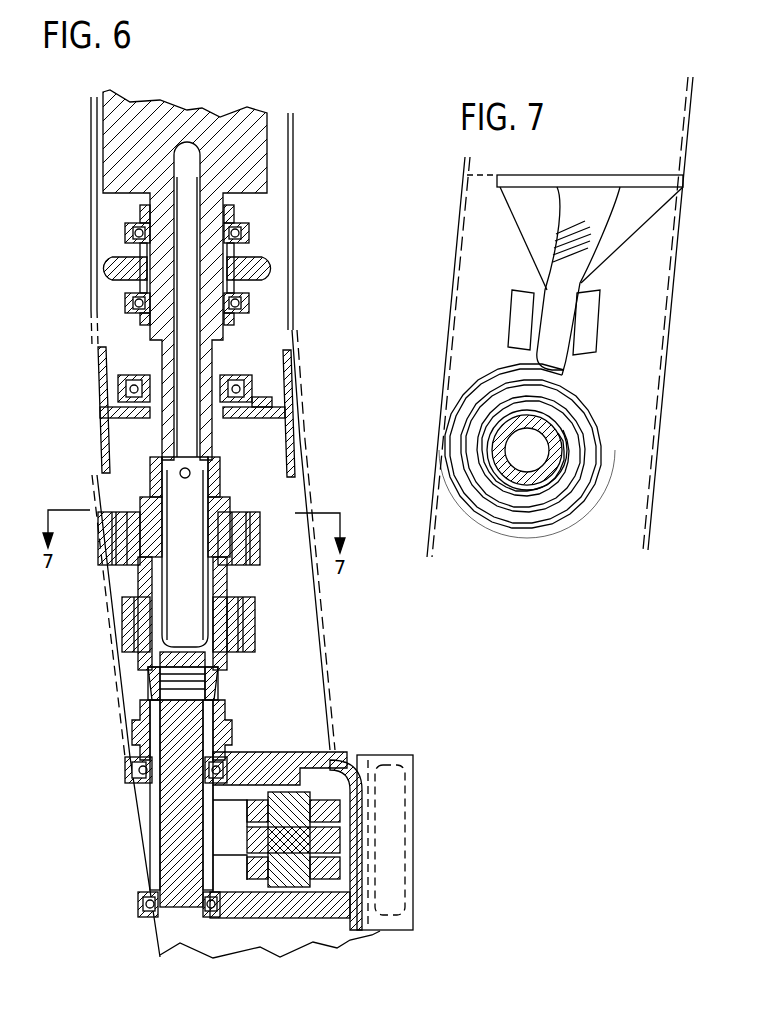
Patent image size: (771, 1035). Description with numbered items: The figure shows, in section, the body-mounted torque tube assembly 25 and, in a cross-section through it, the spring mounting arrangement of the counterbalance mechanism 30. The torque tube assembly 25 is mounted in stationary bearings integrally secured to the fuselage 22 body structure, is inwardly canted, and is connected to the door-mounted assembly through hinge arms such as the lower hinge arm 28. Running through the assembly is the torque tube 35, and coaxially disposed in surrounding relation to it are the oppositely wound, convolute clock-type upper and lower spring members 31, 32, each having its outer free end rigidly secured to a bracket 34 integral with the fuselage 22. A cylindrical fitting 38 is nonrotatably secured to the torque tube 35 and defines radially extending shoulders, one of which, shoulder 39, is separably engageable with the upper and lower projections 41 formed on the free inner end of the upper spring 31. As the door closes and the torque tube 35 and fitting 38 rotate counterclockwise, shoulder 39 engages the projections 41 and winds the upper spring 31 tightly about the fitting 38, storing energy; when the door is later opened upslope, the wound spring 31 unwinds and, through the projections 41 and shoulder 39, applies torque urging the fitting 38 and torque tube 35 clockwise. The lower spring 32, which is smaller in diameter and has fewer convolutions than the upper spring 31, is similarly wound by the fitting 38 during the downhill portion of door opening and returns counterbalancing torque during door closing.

In FIG. 6, the fuselage 22 is at (90, 278).
In FIG. 7, the fuselage 22 is at (447, 302).
In FIG. 6, the body-mounted torque tube assembly 25 is at (288, 553).
In FIG. 6, the lower hinge arm 28 is at (347, 812).
In FIG. 6, the counterbalance mechanism 30 is at (252, 665).
In FIG. 7, the counterbalance mechanism 30 is at (495, 538).
In FIG. 6, the upper convolute spring member 31 is at (258, 548).
In FIG. 7, the upper convolute spring member 31 is at (563, 513).
In FIG. 6, the lower convolute spring member 32 is at (255, 632).
In FIG. 7, the lower convolute spring member 32 is at (538, 290).
In FIG. 7, the bracket 34 is at (609, 232).
In FIG. 6, the torque tube 35 is at (167, 860).
In FIG. 6, the cylindrical fitting 38 is at (222, 500).
In FIG. 7, the shoulder 39 is at (562, 487).
In FIG. 7, the projections 41 is at (567, 457).